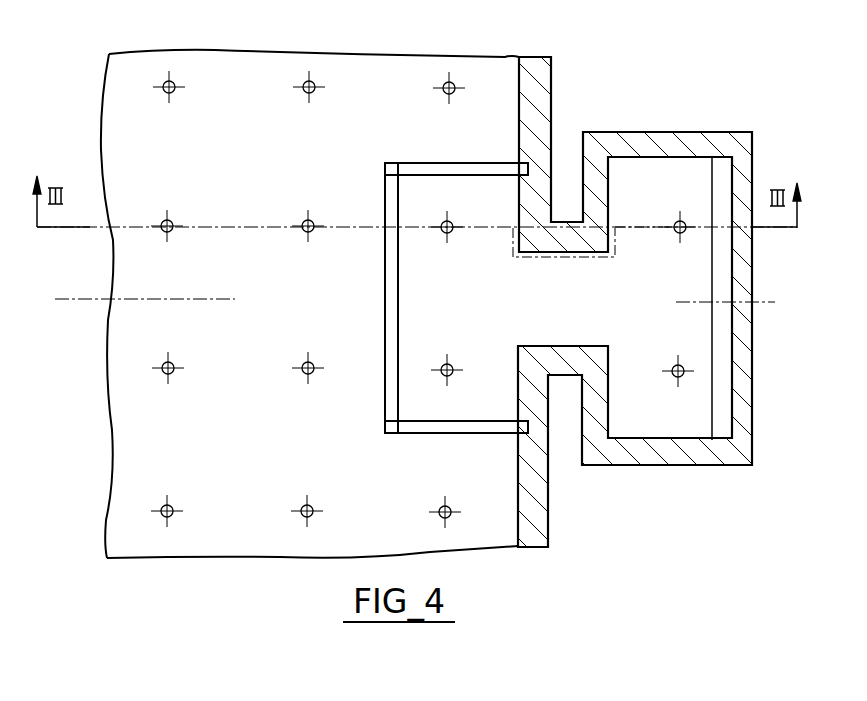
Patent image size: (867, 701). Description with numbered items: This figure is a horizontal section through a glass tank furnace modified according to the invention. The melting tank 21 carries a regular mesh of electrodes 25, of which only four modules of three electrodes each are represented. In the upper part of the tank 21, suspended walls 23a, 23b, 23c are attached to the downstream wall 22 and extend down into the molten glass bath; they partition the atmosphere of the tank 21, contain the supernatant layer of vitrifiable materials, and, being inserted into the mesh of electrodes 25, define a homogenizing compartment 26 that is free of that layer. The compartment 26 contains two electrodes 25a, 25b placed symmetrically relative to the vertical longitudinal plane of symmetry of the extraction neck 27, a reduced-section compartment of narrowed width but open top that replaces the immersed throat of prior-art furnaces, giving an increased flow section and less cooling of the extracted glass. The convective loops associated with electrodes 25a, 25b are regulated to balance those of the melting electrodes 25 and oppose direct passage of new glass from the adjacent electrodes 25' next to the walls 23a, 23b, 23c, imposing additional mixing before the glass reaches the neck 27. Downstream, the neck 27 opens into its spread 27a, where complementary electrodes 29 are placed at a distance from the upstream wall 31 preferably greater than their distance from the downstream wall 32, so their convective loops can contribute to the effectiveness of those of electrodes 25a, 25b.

The tank 21 is at (229, 167).
The downstream wall 22 is at (519, 90).
The suspended wall 23a is at (402, 163).
The suspended wall 23b is at (385, 288).
The suspended wall 23c is at (440, 433).
The electrodes 25 is at (251, 299).
The adjacent electrodes 25' is at (391, 299).
The electrode 25a is at (450, 222).
The electrode 25b is at (450, 365).
The homogenizing compartment 26 is at (451, 308).
The extraction neck 27 is at (571, 310).
The spread 27a is at (676, 311).
The complementary electrodes 29 is at (676, 222).
The upstream wall 31 is at (610, 185).
The downstream wall 32 is at (711, 418).